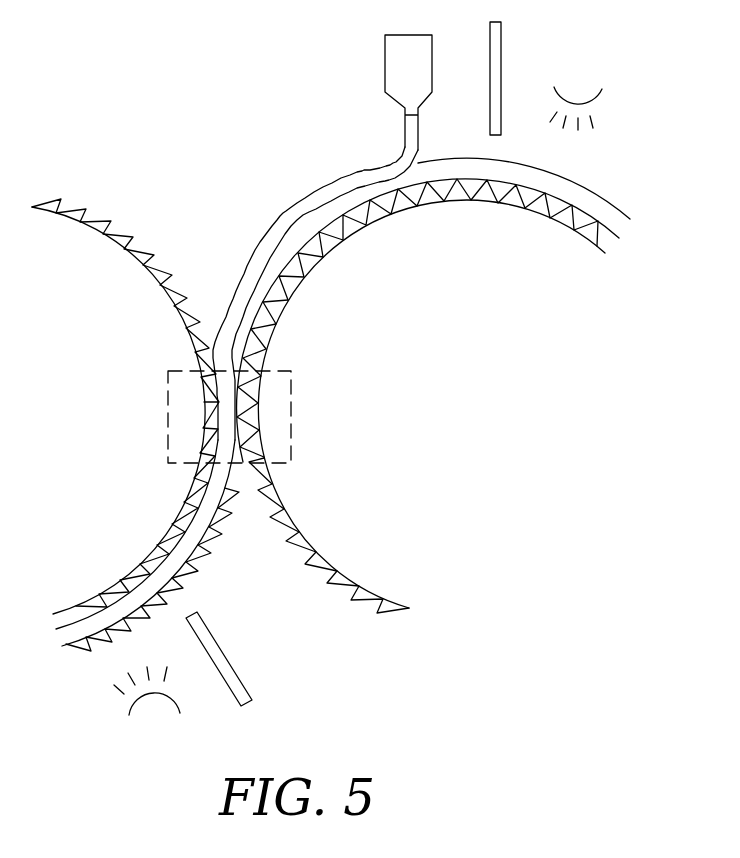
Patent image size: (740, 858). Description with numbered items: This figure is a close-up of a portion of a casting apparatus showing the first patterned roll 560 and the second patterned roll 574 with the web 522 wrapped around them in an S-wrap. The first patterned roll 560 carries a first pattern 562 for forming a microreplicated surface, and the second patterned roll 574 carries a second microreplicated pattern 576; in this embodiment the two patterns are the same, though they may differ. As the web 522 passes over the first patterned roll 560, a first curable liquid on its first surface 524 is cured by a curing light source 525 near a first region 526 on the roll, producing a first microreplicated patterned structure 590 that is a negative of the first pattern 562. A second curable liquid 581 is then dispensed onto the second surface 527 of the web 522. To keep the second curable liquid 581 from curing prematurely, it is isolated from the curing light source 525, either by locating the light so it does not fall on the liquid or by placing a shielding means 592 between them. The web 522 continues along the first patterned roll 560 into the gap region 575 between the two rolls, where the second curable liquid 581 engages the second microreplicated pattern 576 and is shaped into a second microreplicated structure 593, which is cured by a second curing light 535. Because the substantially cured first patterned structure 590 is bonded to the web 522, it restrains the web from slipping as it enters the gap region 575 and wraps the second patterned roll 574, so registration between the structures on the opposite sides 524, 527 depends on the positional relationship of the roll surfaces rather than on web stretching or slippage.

The second patterned roll 574 is at (125, 371).
The second microreplicated pattern 576 is at (147, 243).
The second curable liquid 581 is at (352, 172).
The second surface of the web 527 is at (457, 158).
The shielding means 592 is at (504, 50).
The curing light source 525 is at (580, 93).
The first microreplicated patterned structure 590 is at (320, 250).
The first region 526 is at (570, 205).
The first pattern 562 is at (407, 199).
The web 522 is at (557, 190).
The first surface of the web 524 is at (590, 230).
The gap region 575 is at (292, 402).
The second microreplicated structure 593 is at (185, 570).
The first patterned roll 560 is at (433, 412).
The second curing light 535 is at (148, 702).